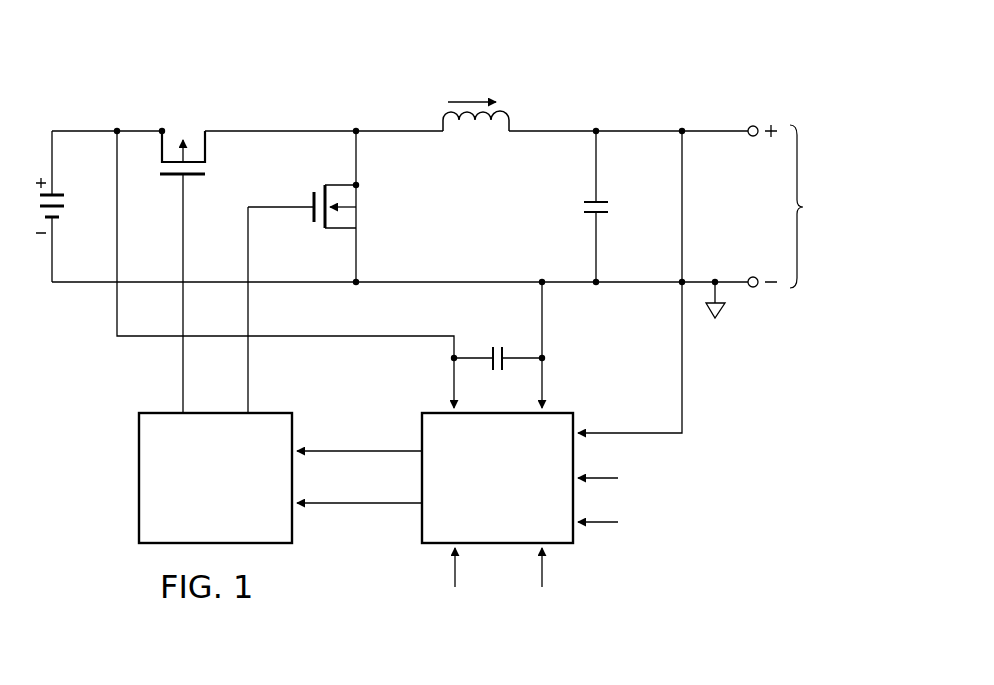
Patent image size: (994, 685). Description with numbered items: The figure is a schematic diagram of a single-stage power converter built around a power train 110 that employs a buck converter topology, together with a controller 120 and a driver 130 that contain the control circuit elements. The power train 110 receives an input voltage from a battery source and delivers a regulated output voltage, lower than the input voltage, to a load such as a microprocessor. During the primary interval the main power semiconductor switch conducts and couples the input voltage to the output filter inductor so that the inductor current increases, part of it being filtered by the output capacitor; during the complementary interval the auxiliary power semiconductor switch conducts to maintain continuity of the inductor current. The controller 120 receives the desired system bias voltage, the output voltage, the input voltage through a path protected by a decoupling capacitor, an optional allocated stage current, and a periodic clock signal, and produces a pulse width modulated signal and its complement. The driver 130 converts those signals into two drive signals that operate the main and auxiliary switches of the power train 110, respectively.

The power train 110 is at (280, 74).
The controller 120 is at (478, 515).
The driver 130 is at (196, 515).